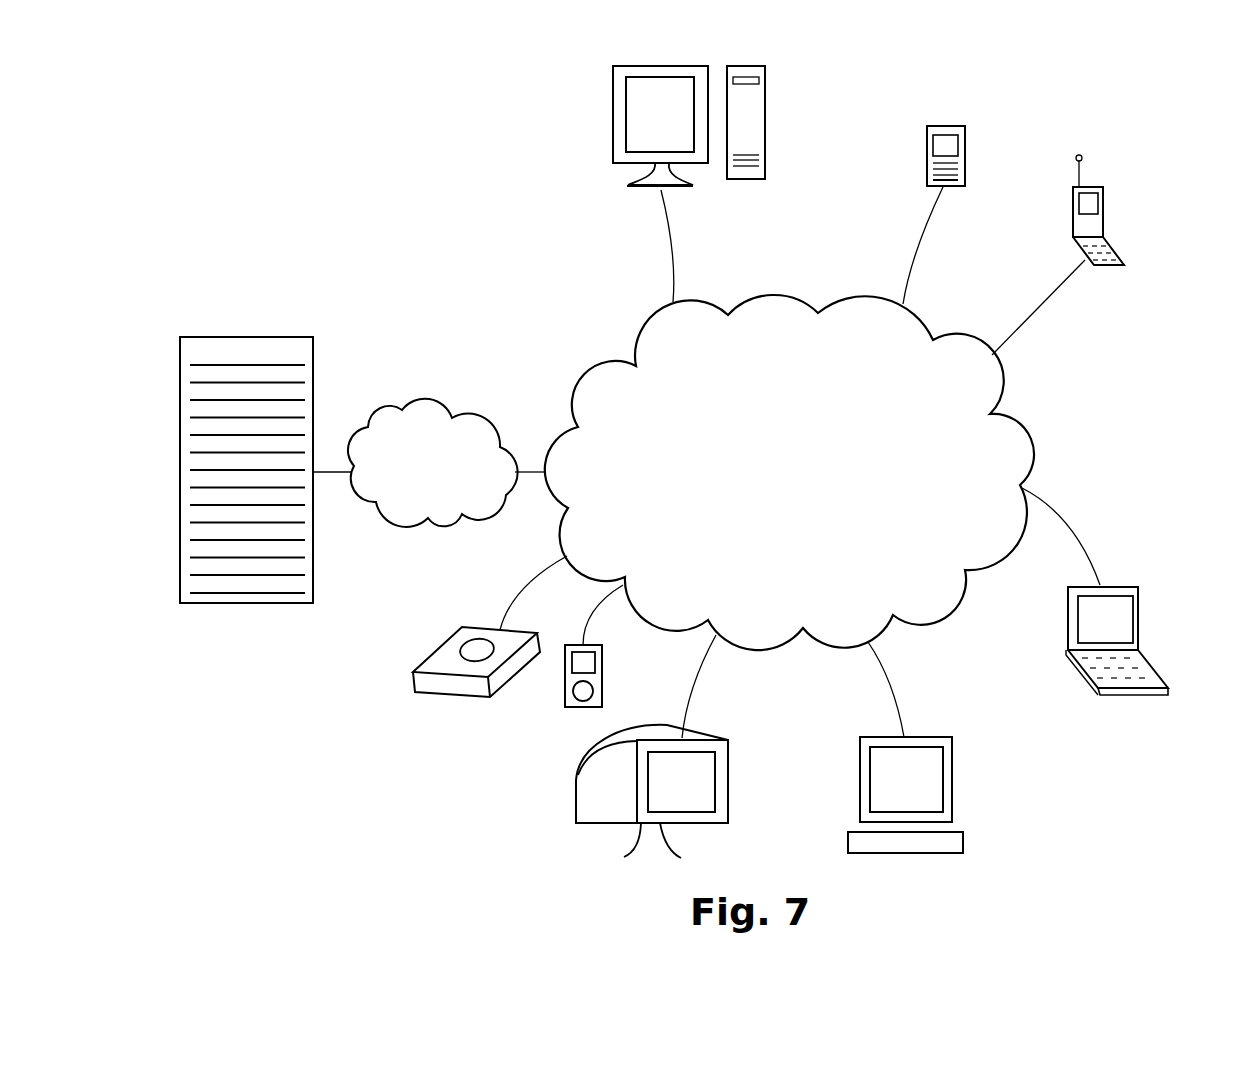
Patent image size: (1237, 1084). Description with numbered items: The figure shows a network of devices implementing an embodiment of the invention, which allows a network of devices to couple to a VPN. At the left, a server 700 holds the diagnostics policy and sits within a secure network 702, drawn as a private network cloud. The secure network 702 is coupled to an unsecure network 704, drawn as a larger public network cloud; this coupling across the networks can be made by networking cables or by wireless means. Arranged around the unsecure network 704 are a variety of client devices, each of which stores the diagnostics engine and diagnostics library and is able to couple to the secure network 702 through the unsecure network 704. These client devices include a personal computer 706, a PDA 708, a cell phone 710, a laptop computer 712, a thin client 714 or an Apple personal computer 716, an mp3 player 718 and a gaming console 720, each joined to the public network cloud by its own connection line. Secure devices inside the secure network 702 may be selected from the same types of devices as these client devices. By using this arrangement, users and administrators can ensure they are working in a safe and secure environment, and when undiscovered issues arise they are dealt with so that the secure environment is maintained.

The server 700 is at (257, 337).
The secure network 702 is at (419, 406).
The unsecure network 704 is at (588, 378).
The personal computer 706 is at (765, 118).
The PDA 708 is at (965, 148).
The cell phone 710 is at (1103, 213).
The laptop computer 712 is at (1138, 612).
The thin client 714 is at (952, 775).
The Apple personal computer 716 is at (728, 780).
The mp3 player 718 is at (567, 703).
The gaming console 720 is at (452, 697).